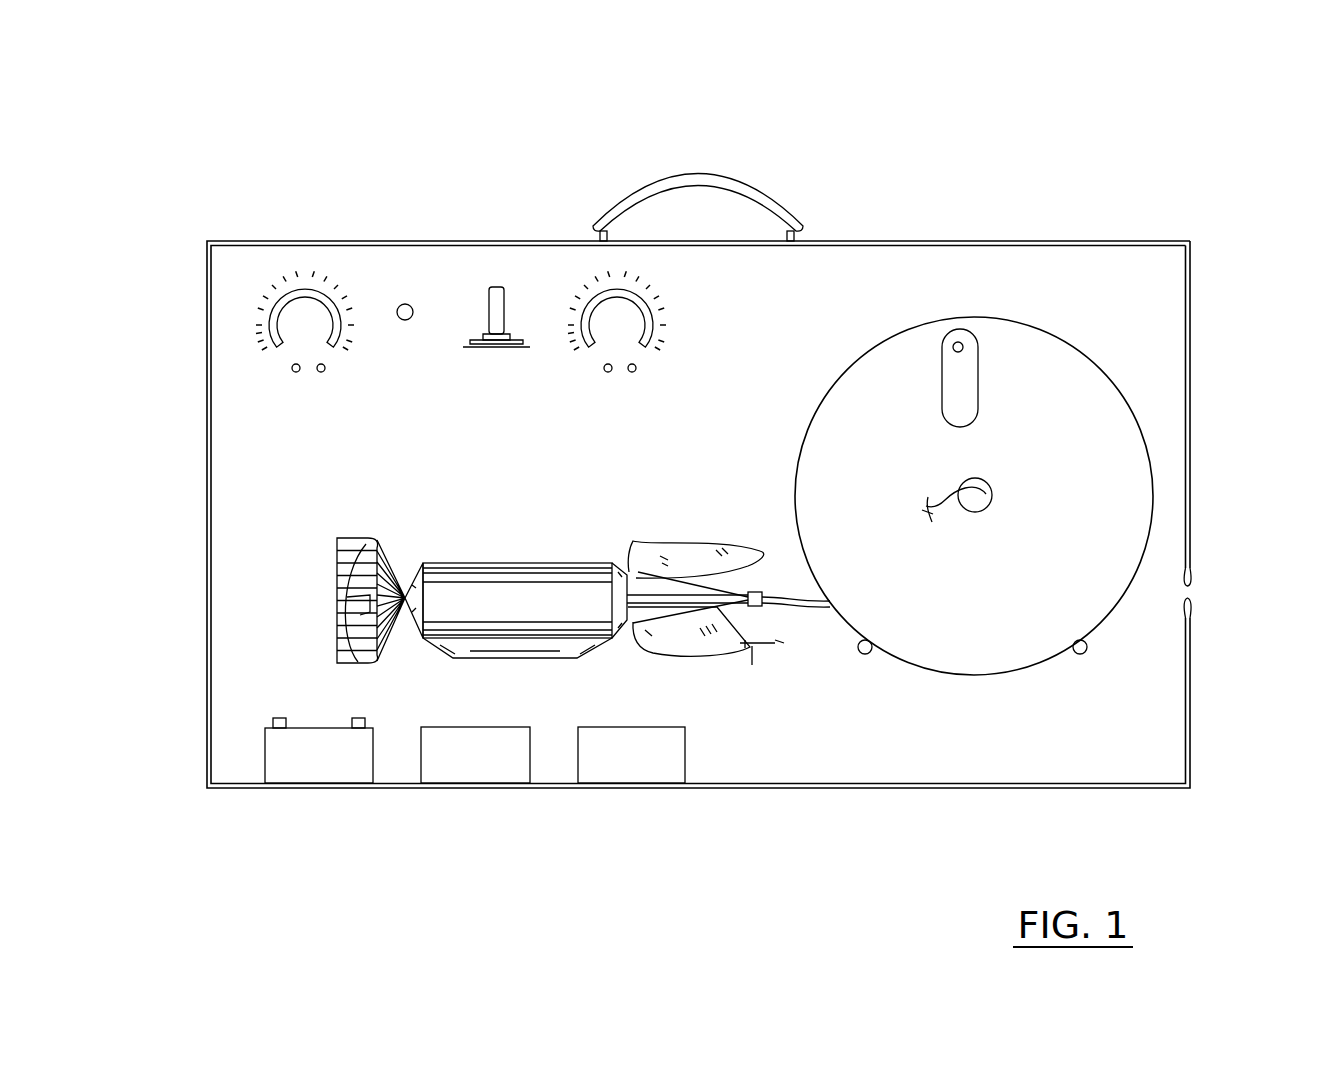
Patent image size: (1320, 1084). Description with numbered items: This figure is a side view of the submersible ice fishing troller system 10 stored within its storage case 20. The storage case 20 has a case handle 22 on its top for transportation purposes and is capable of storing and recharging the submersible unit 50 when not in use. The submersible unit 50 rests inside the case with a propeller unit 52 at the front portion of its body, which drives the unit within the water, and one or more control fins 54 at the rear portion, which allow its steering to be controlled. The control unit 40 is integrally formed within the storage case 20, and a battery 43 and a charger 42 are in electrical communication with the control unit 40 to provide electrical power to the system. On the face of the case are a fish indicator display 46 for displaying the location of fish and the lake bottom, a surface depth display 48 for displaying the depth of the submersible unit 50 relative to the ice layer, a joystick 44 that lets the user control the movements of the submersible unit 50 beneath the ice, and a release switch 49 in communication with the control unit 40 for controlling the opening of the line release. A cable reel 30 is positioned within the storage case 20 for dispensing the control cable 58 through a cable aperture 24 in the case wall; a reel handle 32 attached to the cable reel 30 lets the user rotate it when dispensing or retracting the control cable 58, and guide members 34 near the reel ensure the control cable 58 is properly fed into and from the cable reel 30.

The submersible ice fishing troller system 10 is at (1140, 195).
The storage case 20 is at (853, 234).
The case handle 22 is at (694, 174).
The cable aperture 24 is at (1193, 594).
The cable reel 30 is at (1113, 463).
The reel handle 32 is at (963, 376).
The guide members 34 is at (866, 654).
The control unit 40 is at (665, 770).
The charger 42 is at (478, 775).
The battery 43 is at (325, 775).
The joystick 44 is at (496, 287).
The fish indicator display 46 is at (305, 292).
The surface depth display 48 is at (591, 306).
The release switch 49 is at (404, 303).
The submersible unit 50 is at (332, 588).
The propeller unit 52 is at (366, 658).
The control fins 54 is at (631, 572).
The control cable 58 is at (808, 614).